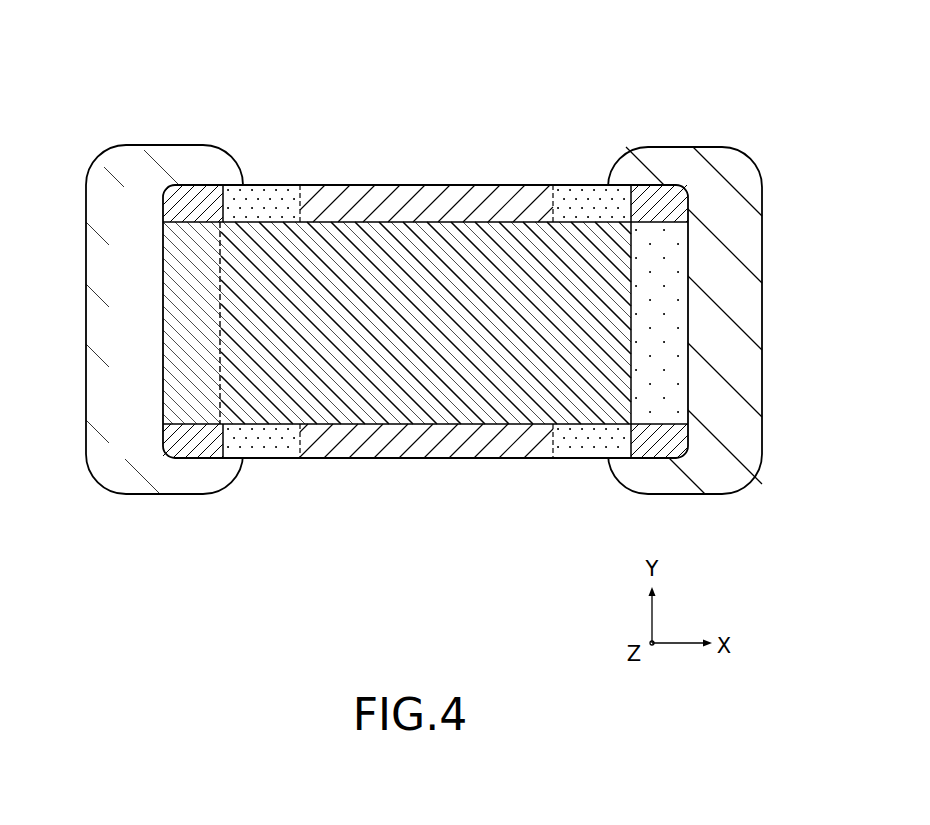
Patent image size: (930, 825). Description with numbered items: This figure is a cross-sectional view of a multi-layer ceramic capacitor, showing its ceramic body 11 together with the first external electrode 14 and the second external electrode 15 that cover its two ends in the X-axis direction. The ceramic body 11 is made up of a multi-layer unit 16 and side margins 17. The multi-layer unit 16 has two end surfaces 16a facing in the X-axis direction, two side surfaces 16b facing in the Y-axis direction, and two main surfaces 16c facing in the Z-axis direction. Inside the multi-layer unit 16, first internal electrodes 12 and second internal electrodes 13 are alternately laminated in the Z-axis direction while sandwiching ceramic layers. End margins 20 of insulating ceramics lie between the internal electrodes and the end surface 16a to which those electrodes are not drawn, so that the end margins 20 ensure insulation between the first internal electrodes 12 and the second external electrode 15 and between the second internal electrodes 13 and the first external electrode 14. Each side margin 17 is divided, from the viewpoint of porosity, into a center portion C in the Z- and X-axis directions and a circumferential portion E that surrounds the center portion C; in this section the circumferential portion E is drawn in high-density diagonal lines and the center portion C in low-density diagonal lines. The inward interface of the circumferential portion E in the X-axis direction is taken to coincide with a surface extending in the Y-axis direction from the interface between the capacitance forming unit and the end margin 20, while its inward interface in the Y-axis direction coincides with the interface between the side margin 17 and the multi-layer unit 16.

The ceramic body 11 is at (619, 108).
The first internal electrodes 12 is at (422, 330).
The second internal electrodes 13 is at (218, 282).
The first external electrode 14 is at (148, 152).
The second external electrode 15 is at (701, 151).
The multi-layer unit 16 is at (159, 422).
The end surfaces 16a is at (688, 241).
The side surfaces 16b is at (262, 213).
The main surfaces 16c is at (262, 459).
The side margins 17 is at (158, 220).
The end margins 20 is at (678, 352).
The circumferential portion E is at (190, 184).
The center portion C is at (428, 185).